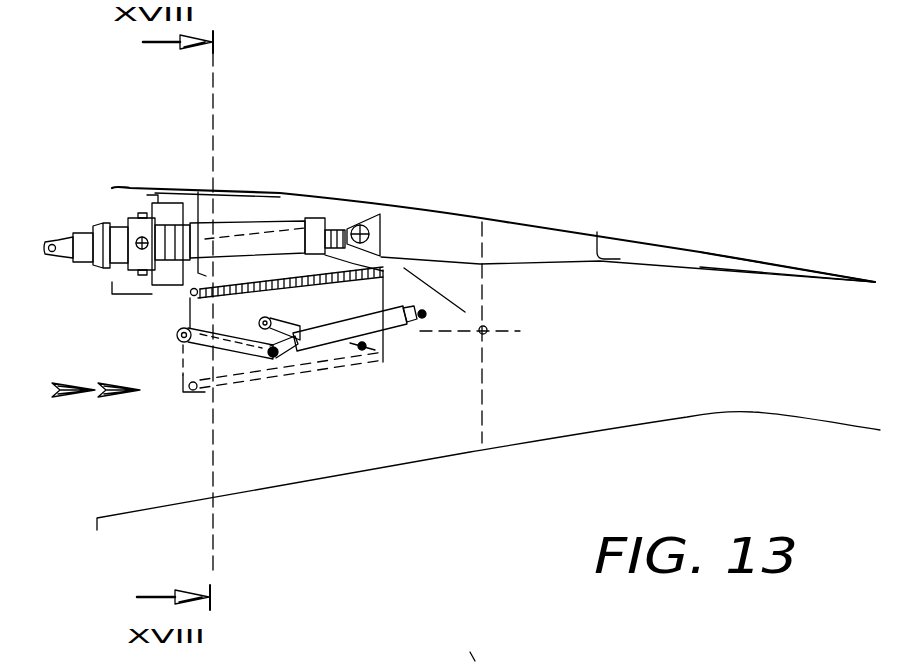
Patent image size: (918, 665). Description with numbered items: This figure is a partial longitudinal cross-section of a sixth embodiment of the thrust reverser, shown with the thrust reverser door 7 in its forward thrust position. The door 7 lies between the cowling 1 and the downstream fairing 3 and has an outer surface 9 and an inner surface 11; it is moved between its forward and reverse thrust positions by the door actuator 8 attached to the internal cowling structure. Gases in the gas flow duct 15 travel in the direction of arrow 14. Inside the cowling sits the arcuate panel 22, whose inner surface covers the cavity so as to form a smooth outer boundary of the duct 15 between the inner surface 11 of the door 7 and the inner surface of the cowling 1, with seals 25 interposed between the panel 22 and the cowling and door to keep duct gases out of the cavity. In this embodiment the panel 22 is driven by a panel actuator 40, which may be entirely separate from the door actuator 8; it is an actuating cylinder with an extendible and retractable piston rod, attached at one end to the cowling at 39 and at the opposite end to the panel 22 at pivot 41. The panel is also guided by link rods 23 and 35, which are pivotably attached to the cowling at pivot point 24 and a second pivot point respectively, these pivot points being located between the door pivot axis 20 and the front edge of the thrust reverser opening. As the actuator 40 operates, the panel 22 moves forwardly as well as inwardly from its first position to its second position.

The cowling 1 is at (121, 186).
The downstream fairing 3 is at (687, 247).
The thrust reverser door 7 is at (407, 238).
The door actuator 8 is at (297, 217).
The outer surface 9 is at (557, 227).
The inner surface 11 is at (514, 257).
The arrow 14 is at (96, 413).
The gas flow duct 15 is at (488, 428).
The door pivot axis 20 is at (488, 328).
The panel 22 is at (305, 289).
The link rod 23 is at (226, 347).
The pivot point 24 is at (185, 343).
The seals 25 is at (191, 294).
The second link rod 35 is at (283, 308).
The cowling attachment point 39 is at (427, 313).
The panel actuator 40 is at (390, 335).
The pivot 41 is at (278, 358).